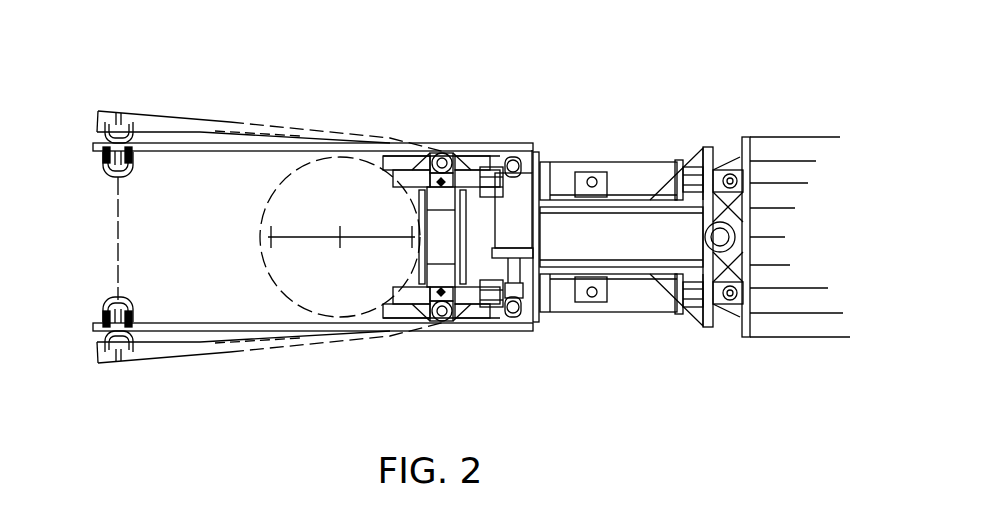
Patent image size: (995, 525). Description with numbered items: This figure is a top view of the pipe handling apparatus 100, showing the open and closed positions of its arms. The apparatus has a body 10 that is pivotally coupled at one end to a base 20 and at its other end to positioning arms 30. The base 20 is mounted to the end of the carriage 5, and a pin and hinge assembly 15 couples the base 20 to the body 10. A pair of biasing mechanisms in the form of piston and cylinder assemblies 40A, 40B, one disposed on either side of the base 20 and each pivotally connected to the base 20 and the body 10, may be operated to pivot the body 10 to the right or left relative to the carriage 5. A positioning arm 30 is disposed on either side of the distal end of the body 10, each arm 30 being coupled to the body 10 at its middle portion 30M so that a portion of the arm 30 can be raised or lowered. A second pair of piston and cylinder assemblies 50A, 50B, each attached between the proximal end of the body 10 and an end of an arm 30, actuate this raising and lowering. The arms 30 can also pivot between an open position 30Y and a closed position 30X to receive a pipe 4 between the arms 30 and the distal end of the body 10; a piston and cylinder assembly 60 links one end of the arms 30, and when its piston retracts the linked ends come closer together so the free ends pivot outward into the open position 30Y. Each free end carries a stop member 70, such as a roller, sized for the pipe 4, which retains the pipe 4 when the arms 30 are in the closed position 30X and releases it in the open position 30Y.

The pipe handling apparatus 100 is at (713, 30).
The positioning arm 30 is at (155, 110).
The open position 30Y is at (105, 128).
The closed position 30X is at (104, 162).
The stop member 70 is at (107, 308).
The pipe 4 is at (358, 185).
The middle portion 30M is at (436, 157).
The piston and cylinder assembly 60 is at (543, 322).
The body 10 is at (598, 233).
The piston and cylinder assembly 50A is at (557, 173).
The piston and cylinder assembly 50B is at (570, 302).
The piston and cylinder assembly 40A is at (641, 172).
The piston and cylinder assembly 40B is at (637, 297).
The pin and hinge assembly 15 is at (728, 300).
The base 20 is at (730, 202).
The carriage 5 is at (807, 150).